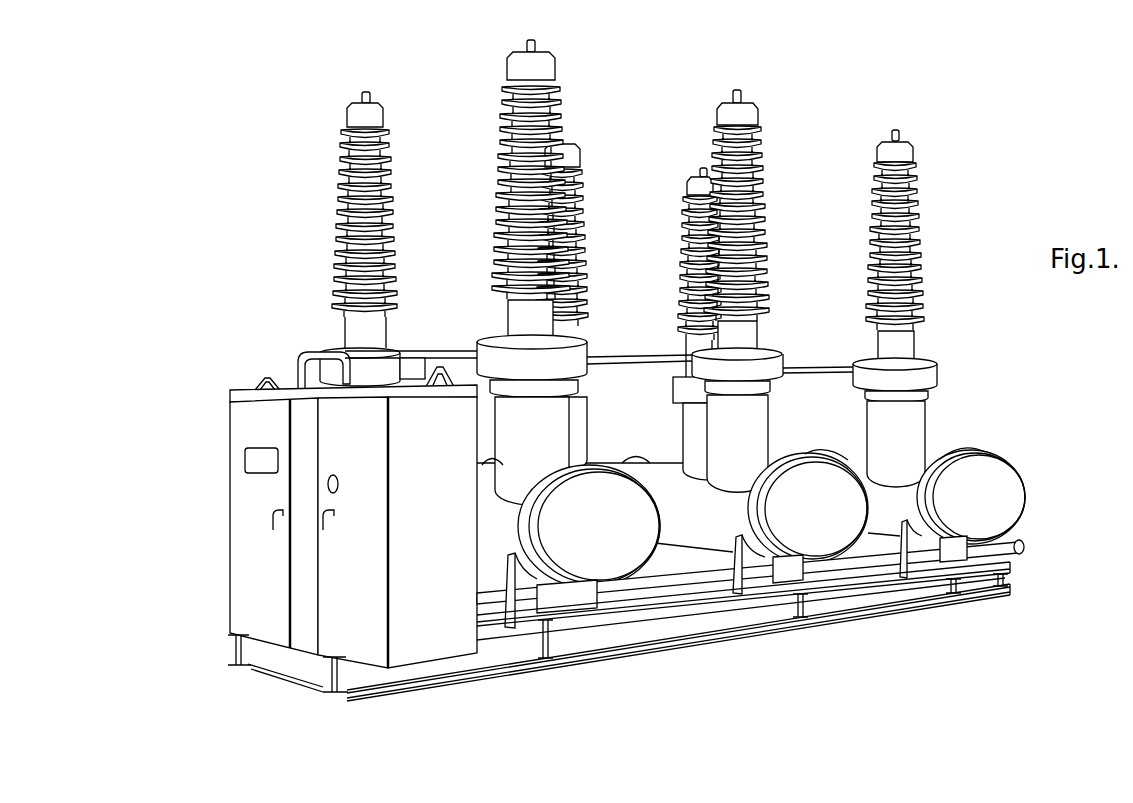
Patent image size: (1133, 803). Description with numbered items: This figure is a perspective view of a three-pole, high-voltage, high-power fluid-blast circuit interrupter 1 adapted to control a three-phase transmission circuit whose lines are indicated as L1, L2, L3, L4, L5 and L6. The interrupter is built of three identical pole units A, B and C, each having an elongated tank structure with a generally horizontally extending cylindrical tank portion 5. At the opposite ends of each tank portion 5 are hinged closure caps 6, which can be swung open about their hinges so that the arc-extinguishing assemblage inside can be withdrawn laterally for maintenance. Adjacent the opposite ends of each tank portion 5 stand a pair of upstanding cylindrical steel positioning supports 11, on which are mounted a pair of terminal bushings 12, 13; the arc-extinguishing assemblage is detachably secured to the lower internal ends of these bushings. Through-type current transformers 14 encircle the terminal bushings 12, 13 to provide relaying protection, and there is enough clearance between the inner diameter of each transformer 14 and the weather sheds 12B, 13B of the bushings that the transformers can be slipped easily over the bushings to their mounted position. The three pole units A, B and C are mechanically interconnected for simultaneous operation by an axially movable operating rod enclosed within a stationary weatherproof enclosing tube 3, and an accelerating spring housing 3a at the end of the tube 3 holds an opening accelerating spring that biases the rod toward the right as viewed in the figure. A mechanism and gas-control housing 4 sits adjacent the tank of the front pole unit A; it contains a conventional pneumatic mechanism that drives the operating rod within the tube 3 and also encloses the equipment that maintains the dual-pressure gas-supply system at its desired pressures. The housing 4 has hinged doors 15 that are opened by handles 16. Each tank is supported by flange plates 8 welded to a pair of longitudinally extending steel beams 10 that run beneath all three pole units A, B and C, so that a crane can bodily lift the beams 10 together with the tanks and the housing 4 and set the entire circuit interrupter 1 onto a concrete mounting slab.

The fluid-blast circuit interrupter 1 is at (995, 149).
The weatherproof enclosing tube 3 is at (708, 575).
The accelerating spring housing 3a is at (1020, 551).
The mechanism and gas-control housing 4 is at (452, 668).
The cylindrical tank portion 5 is at (498, 561).
The hinged closure cap 6 is at (490, 459).
The flange plate 8 is at (544, 641).
The steel beam 10 is at (288, 665).
The cylindrical steel positioning support 11 is at (582, 421).
The terminal bushing 12 is at (321, 229).
The weather shed 12B is at (396, 216).
The terminal bushing 13 is at (486, 231).
The weather shed 13B is at (500, 195).
The through-type current transformer 14 is at (328, 360).
The hinged door 15 is at (244, 506).
The handle 16 is at (280, 530).
The transmission line L1 is at (360, 97).
The transmission line L2 is at (536, 47).
The transmission line L3 is at (506, 162).
The transmission line L4 is at (742, 97).
The transmission line L5 is at (700, 174).
The transmission line L6 is at (898, 135).
The pole unit A is at (449, 308).
The pole unit B is at (637, 312).
The pole unit C is at (826, 318).